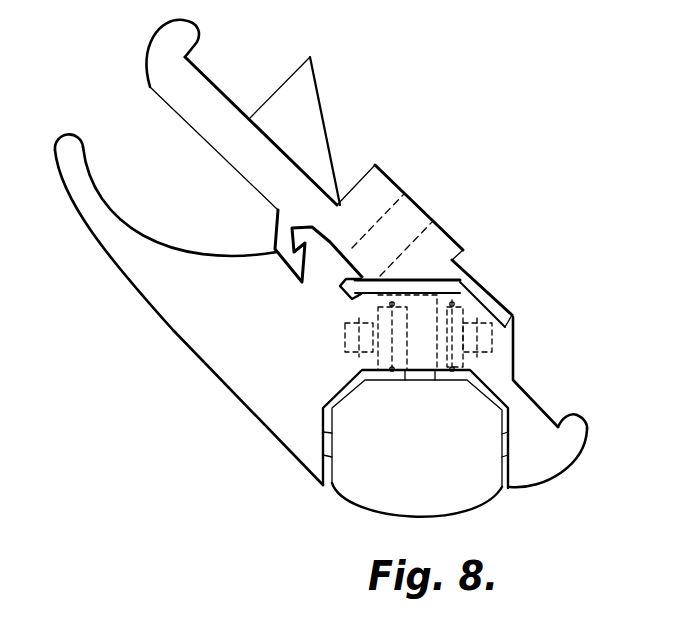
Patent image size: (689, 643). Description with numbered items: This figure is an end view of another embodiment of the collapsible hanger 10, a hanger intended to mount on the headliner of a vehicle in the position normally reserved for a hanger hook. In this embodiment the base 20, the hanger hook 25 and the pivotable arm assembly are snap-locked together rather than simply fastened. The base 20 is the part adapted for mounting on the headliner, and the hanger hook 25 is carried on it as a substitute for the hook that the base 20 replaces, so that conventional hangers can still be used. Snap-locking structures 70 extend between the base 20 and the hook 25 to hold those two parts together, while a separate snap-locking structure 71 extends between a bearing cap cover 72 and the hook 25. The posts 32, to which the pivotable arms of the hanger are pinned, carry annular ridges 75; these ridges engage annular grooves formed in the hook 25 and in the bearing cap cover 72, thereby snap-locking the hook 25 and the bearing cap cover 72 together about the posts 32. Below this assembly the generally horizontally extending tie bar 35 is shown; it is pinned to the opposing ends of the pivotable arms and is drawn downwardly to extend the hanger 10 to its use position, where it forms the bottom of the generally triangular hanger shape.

The collapsible hanger 10 is at (168, 402).
The base 20 is at (190, 87).
The hanger hook 25 is at (132, 257).
The posts 32 is at (515, 315).
The tie bar 35 is at (365, 488).
The snap-locking structures 70 is at (278, 207).
The snap-locking structure 71 is at (328, 269).
The bearing cap cover 72 is at (492, 366).
The annular ridges 75 is at (488, 293).